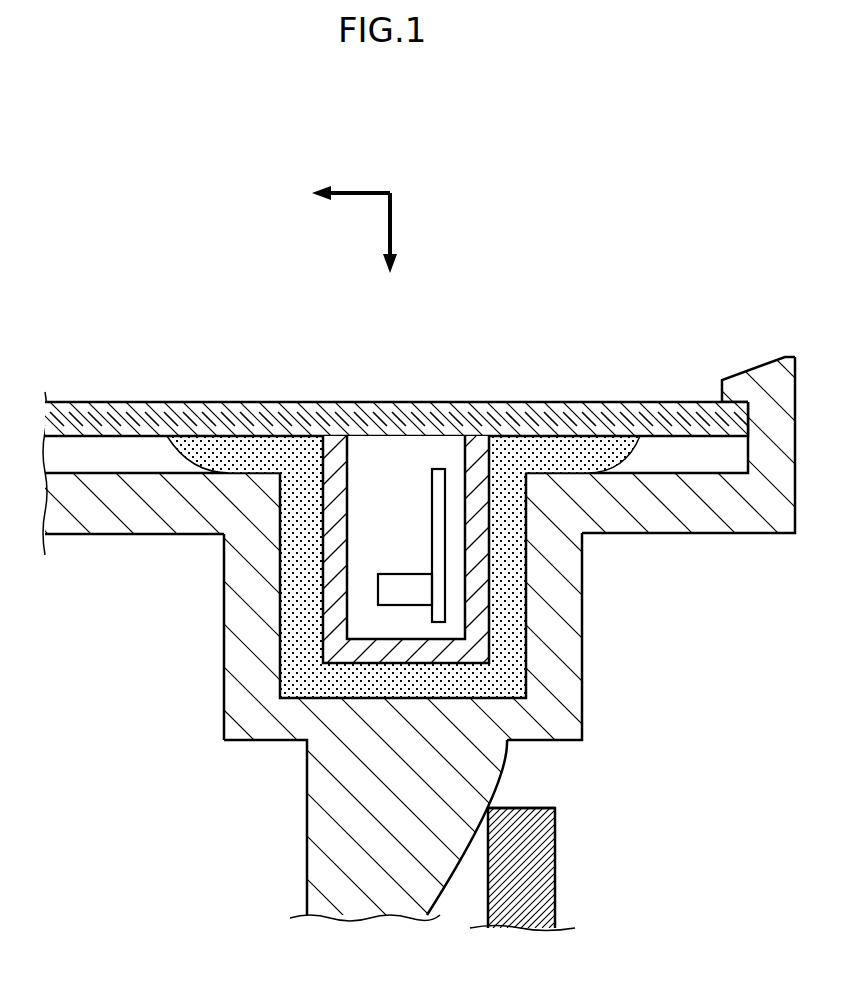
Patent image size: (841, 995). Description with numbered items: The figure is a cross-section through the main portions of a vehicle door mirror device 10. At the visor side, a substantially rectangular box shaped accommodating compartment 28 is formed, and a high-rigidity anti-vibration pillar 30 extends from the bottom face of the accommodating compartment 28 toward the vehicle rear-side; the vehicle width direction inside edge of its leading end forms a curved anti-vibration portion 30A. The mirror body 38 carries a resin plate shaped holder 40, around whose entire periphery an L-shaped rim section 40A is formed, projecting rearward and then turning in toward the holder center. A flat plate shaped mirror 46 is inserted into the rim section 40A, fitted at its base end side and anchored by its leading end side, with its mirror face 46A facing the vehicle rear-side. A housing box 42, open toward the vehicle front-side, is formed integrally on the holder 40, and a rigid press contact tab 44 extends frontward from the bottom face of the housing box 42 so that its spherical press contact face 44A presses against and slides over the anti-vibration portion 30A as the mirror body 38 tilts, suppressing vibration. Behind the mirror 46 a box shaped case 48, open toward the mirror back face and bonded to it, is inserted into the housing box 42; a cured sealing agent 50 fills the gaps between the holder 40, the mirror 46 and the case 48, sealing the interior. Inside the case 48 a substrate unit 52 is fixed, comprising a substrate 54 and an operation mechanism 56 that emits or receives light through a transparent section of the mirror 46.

The vehicle door mirror device 10 is at (143, 246).
The accommodating compartment 28 is at (164, 795).
The anti-vibration pillar 30 is at (555, 868).
The anti-vibration portion 30A is at (490, 797).
The mirror body 38 is at (138, 370).
The holder 40 is at (143, 537).
The rim section 40A is at (748, 372).
The housing box 42 is at (224, 652).
The press contact tab 44 is at (307, 848).
The press contact face 44A is at (441, 896).
The mirror 46 is at (240, 400).
The mirror face 46A is at (604, 400).
The case 48 is at (497, 583).
The sealing agent 50 is at (530, 651).
The substrate unit 52 is at (430, 484).
The substrate 54 is at (432, 518).
The operation mechanism 56 is at (378, 588).